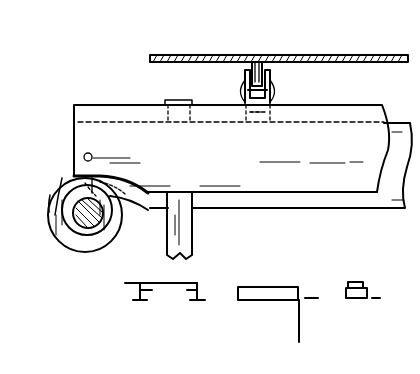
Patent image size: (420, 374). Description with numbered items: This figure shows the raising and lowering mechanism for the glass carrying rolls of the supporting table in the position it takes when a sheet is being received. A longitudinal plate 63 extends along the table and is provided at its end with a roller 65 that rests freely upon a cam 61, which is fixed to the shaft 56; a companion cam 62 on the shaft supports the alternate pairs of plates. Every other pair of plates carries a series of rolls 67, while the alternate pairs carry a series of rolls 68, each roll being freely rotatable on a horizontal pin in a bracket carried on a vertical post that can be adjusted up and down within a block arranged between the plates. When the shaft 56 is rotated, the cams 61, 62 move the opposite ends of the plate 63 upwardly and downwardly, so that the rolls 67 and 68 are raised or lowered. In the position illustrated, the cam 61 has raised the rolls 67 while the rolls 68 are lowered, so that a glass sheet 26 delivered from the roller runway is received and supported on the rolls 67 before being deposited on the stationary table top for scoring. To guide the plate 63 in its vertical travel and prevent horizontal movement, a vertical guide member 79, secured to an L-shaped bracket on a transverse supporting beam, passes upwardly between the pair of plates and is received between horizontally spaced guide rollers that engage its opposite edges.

The glass sheet 26 is at (352, 55).
The roll 67 is at (256, 60).
The roll 68 is at (243, 90).
The plate 63 is at (377, 112).
The roller 65 is at (128, 182).
The cam 61 is at (66, 178).
The cam 62 is at (66, 244).
The shaft 56 is at (100, 236).
The vertical guide member 79 is at (185, 237).